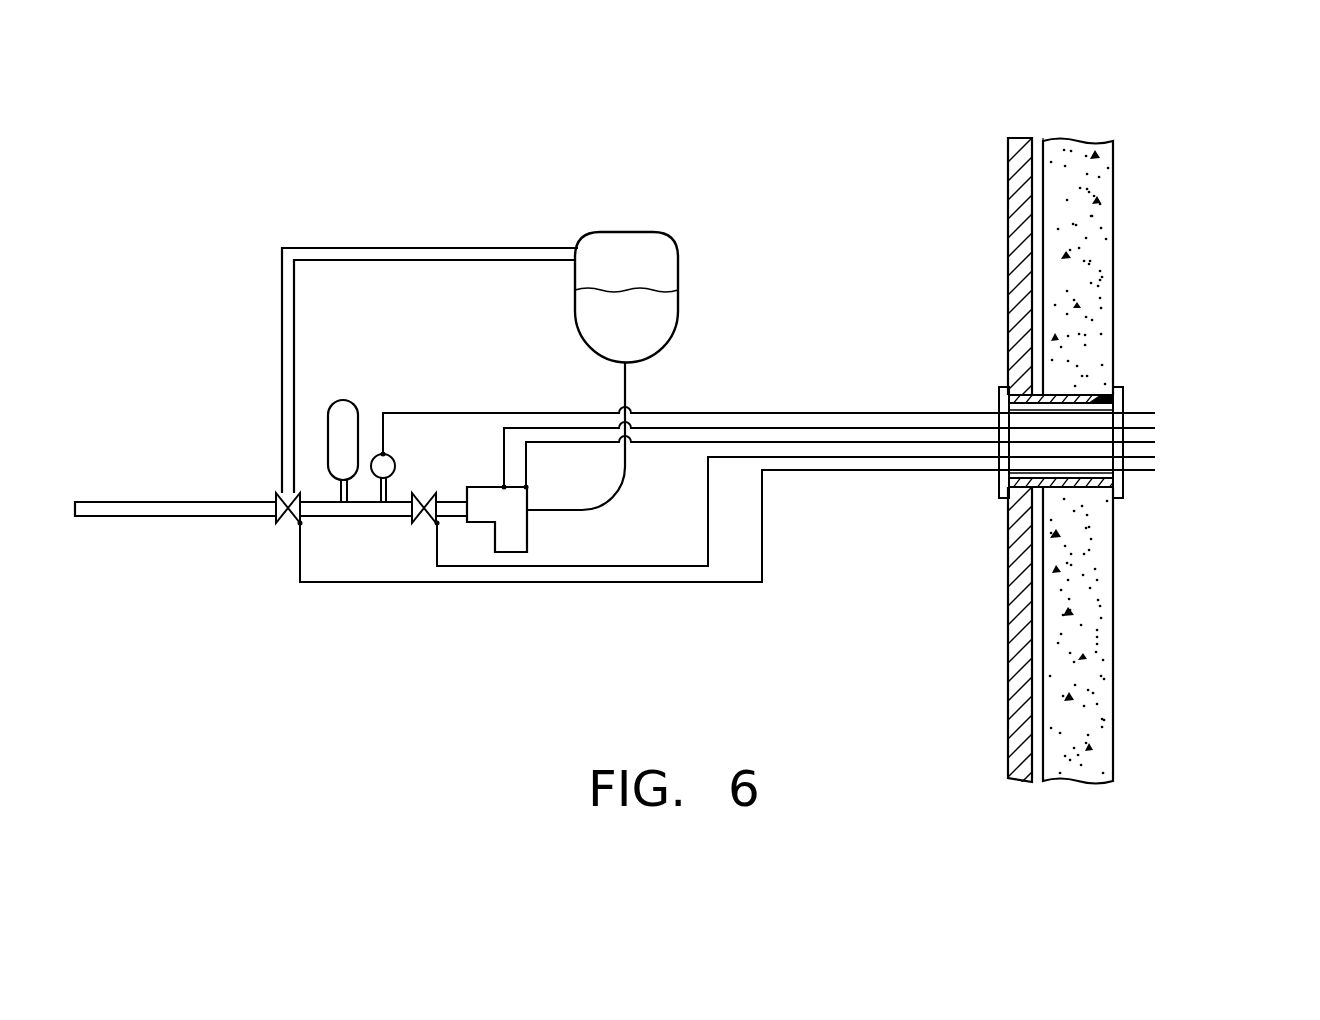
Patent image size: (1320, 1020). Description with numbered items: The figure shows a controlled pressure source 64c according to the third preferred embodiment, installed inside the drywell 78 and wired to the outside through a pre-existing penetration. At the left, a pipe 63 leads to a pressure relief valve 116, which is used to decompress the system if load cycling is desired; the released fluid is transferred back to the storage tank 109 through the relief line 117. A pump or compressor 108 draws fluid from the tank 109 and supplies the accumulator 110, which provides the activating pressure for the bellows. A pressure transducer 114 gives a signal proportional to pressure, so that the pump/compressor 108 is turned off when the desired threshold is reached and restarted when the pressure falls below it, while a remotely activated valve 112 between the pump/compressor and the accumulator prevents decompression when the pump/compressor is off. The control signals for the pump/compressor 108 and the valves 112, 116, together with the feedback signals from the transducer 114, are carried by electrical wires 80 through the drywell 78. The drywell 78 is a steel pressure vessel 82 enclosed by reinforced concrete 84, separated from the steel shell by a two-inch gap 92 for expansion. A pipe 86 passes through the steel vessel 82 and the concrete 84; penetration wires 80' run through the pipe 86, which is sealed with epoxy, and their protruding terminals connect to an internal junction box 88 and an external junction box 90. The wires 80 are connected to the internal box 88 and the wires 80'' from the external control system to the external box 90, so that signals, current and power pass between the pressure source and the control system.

The pipe 63 is at (155, 512).
The pressure relief valve 116 is at (283, 523).
The relief line 117 is at (365, 248).
The storage tank 109 is at (676, 246).
The controlled pressure source 64c is at (476, 364).
The accumulator 110 is at (345, 400).
The pressure transducer 114 is at (388, 462).
The remotely activated valve 112 is at (433, 524).
The pump or compressor 108 is at (520, 532).
The drywell 78 is at (988, 219).
The steel pressure vessel 82 is at (1008, 605).
The reinforced concrete 84 is at (1100, 273).
The gap 92 is at (1040, 142).
The electrical wires 80 is at (976, 423).
The penetration wires 80' is at (1156, 370).
The electrical wires from control system 80'' is at (1205, 432).
The internal junction box 88 is at (1000, 494).
The external junction box 90 is at (1125, 490).
The pipe 86 is at (1083, 488).